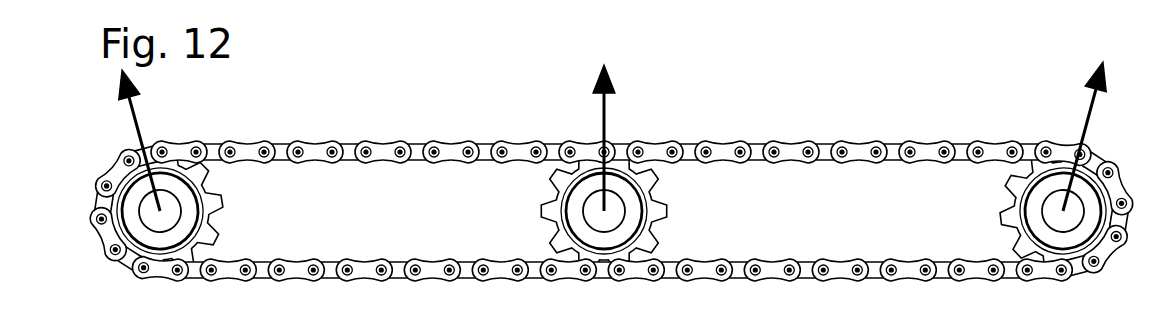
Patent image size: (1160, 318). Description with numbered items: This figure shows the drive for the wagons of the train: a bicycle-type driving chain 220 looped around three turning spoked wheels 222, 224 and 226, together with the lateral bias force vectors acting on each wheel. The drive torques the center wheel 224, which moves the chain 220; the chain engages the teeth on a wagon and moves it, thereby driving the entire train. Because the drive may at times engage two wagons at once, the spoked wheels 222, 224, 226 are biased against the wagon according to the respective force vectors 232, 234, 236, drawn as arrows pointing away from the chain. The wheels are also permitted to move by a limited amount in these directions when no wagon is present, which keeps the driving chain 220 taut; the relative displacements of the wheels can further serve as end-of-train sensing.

The driving chain 220 is at (758, 140).
The spoked wheel 222 is at (170, 207).
The center spoked wheel 224 is at (592, 205).
The spoked wheel 226 is at (1053, 215).
The force vector 232 is at (138, 125).
The force vector 234 is at (597, 118).
The force vector 236 is at (1082, 115).